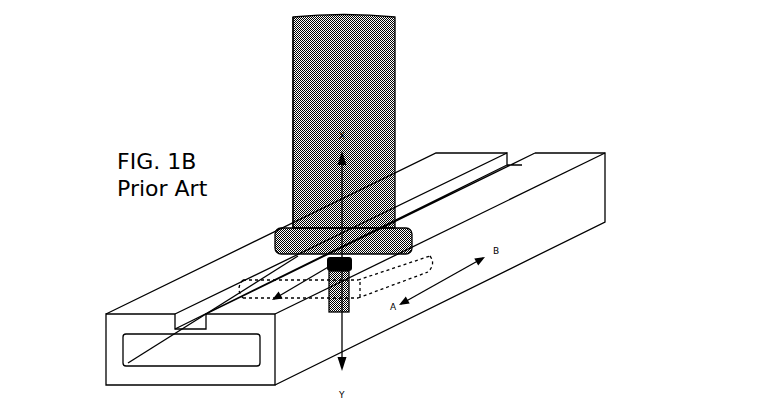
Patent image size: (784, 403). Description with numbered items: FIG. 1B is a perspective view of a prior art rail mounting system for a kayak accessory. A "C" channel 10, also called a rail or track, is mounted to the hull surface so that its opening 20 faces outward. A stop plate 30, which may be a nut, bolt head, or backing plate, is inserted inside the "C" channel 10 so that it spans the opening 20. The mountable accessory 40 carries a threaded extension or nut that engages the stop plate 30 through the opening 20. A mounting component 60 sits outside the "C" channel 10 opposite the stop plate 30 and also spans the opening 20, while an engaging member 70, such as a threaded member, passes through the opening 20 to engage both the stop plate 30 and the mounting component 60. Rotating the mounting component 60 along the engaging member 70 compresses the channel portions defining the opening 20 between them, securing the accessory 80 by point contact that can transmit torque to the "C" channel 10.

The "C" channel 10 is at (593, 182).
The opening 20 is at (516, 137).
The stop plate 30 is at (106, 314).
The mountable accessory 40 is at (368, 55).
The mounting component 60 is at (277, 241).
The engaging member 70 is at (352, 305).
The accessory 80 is at (292, 102).